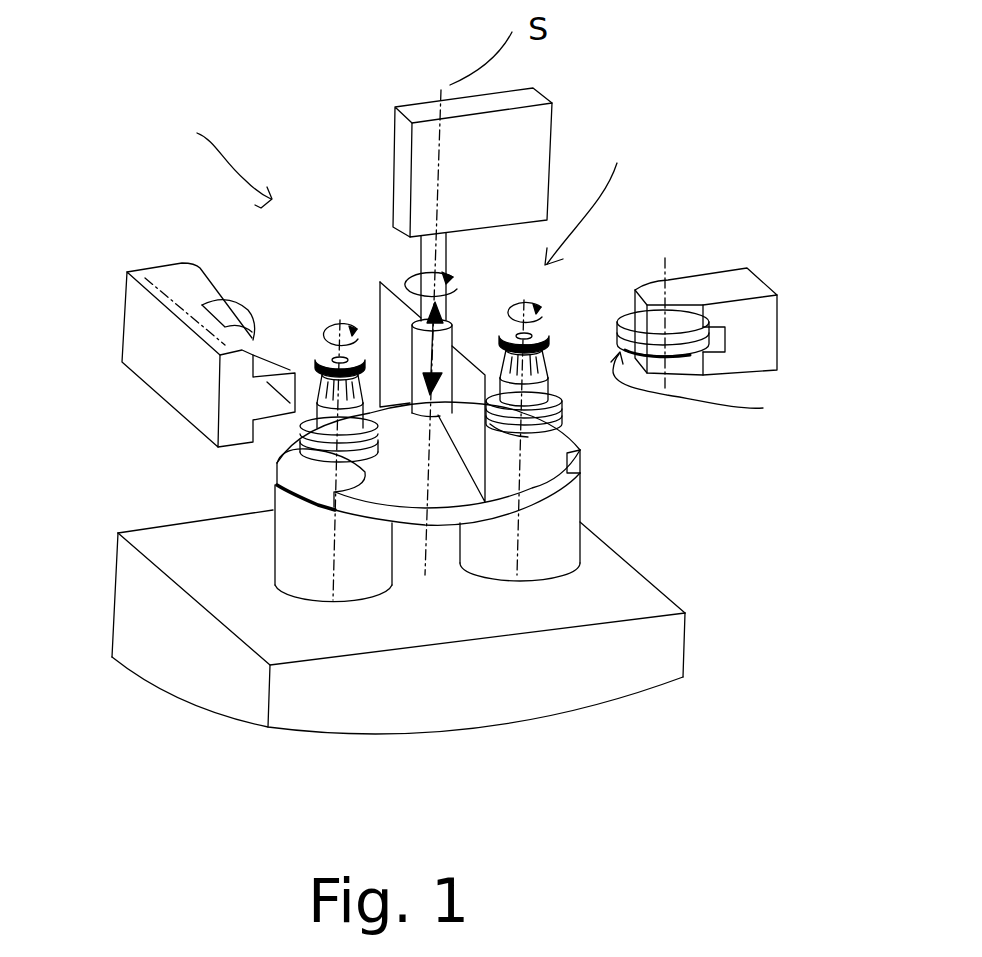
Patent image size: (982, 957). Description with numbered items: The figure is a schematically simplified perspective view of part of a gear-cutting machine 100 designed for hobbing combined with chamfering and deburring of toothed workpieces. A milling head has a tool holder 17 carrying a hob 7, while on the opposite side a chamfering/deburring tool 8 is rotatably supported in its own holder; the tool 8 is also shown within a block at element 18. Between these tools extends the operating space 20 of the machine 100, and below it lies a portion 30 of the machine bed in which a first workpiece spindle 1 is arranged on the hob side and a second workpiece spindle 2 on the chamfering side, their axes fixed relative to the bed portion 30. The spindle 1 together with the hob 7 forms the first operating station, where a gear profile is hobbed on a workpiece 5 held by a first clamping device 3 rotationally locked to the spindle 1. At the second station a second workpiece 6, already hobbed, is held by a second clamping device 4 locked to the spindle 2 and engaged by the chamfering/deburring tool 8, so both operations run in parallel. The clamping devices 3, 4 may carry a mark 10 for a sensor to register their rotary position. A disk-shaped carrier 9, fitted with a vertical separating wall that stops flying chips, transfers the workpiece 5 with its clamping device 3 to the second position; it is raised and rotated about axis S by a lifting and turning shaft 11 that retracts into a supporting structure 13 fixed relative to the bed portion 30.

The gear-cutting machine 100 is at (696, 40).
The first workpiece spindle 1 is at (275, 552).
The second workpiece spindle 2 is at (580, 503).
The first clamping device 3 is at (297, 418).
The second clamping device 4 is at (550, 392).
The first workpiece 5 is at (308, 335).
The second workpiece 6 is at (547, 330).
The hob 7 is at (278, 338).
The chamfering/deburring tool 8 is at (705, 393).
The carrier 9 is at (380, 300).
The mark 10 is at (296, 421).
The lifting and turning shaft 11 is at (442, 260).
The supporting structure 13 is at (397, 195).
The tool holder 17 is at (165, 399).
The second tool holder 18 is at (777, 335).
The operating space 20 is at (413, 172).
The portion of machine bed 30 is at (643, 670).